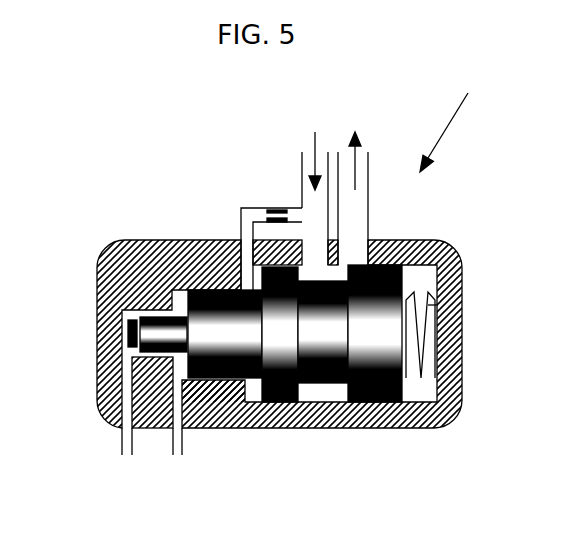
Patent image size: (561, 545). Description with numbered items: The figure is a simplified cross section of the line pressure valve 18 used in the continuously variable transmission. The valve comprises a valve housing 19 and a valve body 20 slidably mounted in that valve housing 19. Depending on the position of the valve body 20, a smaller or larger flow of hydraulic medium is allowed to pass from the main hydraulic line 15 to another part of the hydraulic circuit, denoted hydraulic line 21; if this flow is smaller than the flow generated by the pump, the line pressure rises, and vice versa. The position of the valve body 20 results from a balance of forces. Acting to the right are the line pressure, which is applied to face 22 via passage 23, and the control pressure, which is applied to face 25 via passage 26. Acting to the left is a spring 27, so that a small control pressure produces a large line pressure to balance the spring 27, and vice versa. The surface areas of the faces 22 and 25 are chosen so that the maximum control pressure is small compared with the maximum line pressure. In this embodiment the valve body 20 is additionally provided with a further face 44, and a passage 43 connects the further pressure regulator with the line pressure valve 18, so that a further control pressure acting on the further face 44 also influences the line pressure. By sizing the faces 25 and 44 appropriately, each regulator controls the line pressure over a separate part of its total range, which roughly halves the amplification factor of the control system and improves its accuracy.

The main hydraulic line 15 is at (302, 170).
The line pressure valve 18 is at (458, 122).
The valve housing 19 is at (433, 428).
The valve body 20 is at (392, 258).
The hydraulic line 21 is at (368, 172).
The face 22 is at (262, 385).
The passage 23 is at (241, 222).
The face 25 is at (123, 308).
The passage 26 is at (122, 440).
The spring 27 is at (460, 266).
The passage 43 is at (182, 445).
The further face 44 is at (187, 306).